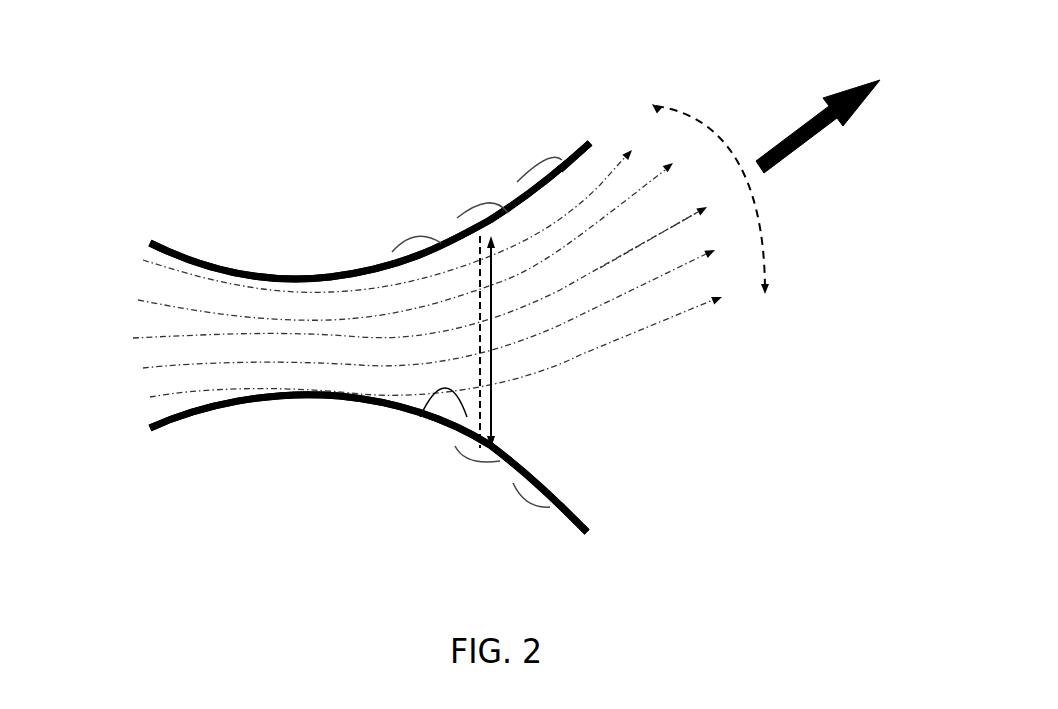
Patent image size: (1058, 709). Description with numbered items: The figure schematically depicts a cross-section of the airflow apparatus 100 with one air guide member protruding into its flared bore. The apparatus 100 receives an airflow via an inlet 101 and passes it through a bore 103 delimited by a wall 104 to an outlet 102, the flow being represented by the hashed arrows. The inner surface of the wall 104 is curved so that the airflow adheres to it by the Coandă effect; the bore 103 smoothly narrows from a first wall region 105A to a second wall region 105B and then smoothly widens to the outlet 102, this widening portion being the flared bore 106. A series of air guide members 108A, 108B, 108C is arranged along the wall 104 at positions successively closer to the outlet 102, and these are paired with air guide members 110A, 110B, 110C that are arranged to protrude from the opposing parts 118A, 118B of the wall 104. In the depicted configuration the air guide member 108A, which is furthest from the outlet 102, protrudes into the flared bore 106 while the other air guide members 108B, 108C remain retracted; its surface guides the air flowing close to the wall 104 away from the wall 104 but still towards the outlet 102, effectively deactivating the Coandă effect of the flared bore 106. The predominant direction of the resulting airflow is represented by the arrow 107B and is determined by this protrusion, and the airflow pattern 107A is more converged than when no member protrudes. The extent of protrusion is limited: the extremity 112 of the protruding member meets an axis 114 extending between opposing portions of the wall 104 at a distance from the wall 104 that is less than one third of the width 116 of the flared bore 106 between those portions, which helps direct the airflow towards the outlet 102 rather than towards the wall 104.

The airflow apparatus 100 is at (132, 82).
The inlet 101 is at (140, 353).
The outlet 102 is at (612, 377).
The bore 103 is at (230, 353).
The wall 104 is at (325, 400).
The first wall region 105A is at (173, 243).
The second wall region 105B is at (320, 275).
The flared bore 106 is at (547, 288).
The airflow pattern 107A is at (733, 160).
The predominant airflow direction arrow 107B is at (803, 110).
The air guide member 108A is at (422, 414).
The air guide member 108B is at (490, 466).
The air guide member 108C is at (535, 503).
The air guide member 110A is at (413, 242).
The air guide member 110B is at (478, 210).
The air guide member 110C is at (530, 175).
The extremity 112 is at (492, 398).
The axis 114 is at (490, 340).
The width 116 is at (492, 378).
The opposing part of the wall 118A is at (503, 213).
The opposing part of the wall 118B is at (532, 476).